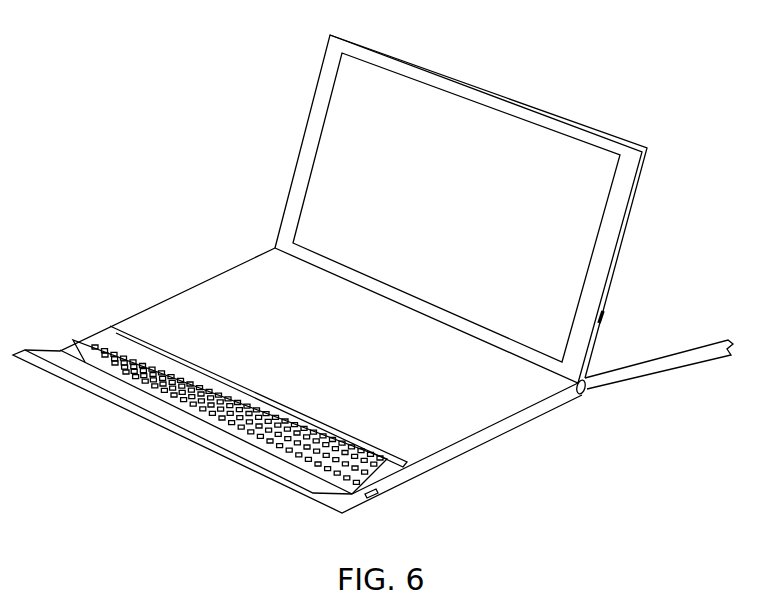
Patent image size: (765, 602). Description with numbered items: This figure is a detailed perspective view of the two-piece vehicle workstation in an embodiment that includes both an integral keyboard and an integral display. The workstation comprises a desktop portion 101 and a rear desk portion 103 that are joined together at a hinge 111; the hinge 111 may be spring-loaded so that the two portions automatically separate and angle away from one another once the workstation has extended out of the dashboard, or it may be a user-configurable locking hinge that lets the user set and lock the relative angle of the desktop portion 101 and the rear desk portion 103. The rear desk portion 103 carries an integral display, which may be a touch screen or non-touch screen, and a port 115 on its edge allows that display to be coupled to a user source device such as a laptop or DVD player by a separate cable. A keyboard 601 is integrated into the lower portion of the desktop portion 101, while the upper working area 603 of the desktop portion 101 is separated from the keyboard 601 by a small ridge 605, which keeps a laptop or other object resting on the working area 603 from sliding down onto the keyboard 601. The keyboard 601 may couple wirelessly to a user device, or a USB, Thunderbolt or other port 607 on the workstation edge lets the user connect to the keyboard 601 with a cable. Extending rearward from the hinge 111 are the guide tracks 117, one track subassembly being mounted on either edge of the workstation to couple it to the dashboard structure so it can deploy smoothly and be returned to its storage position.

The desktop portion 101 is at (363, 358).
The rear desk portion 103 is at (463, 198).
The hinge 111 is at (581, 394).
The port 115 is at (605, 323).
The guide tracks 117 is at (660, 368).
The keyboard 601 is at (127, 345).
The working area 603 is at (261, 298).
The ridge 605 is at (403, 469).
The port 607 is at (375, 496).